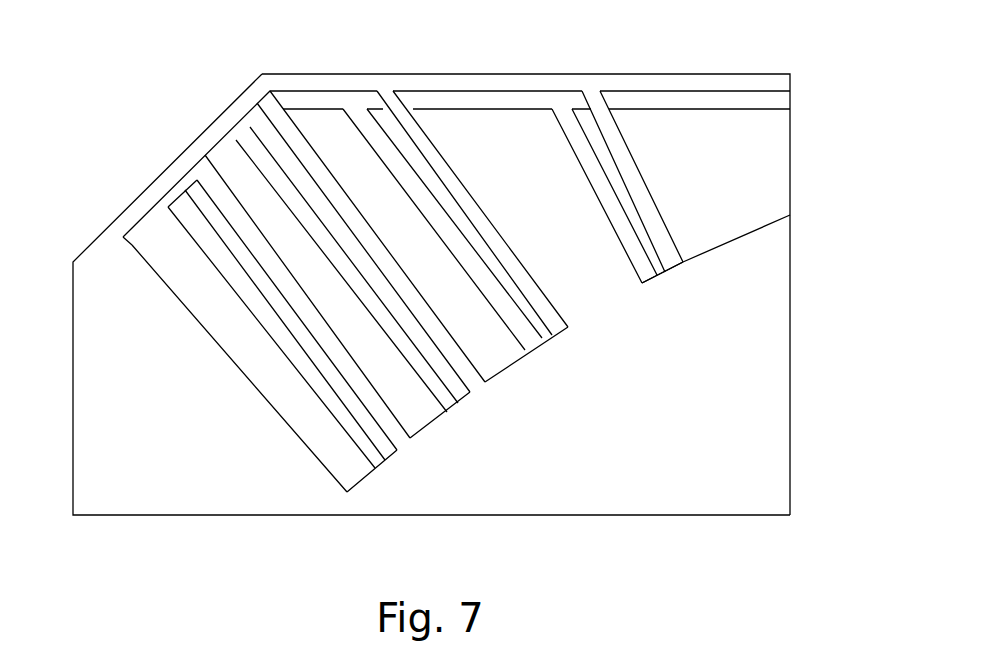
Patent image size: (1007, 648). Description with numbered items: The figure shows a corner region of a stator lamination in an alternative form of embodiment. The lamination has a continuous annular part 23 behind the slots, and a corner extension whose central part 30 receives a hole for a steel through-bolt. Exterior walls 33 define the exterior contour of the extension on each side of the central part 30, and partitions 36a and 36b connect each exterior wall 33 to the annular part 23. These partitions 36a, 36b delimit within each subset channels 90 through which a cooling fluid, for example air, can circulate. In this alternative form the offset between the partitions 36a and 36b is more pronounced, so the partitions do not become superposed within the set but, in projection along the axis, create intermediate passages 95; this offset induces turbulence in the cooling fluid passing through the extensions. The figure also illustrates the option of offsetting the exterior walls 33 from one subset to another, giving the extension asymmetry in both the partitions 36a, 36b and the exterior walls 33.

The annular part 23 is at (750, 368).
The central part 30 is at (163, 480).
The exterior wall 33 is at (352, 73).
The partition 36a is at (302, 135).
The partition 36b is at (602, 180).
The channel 90 is at (535, 128).
The intermediate passage 95 is at (220, 228).